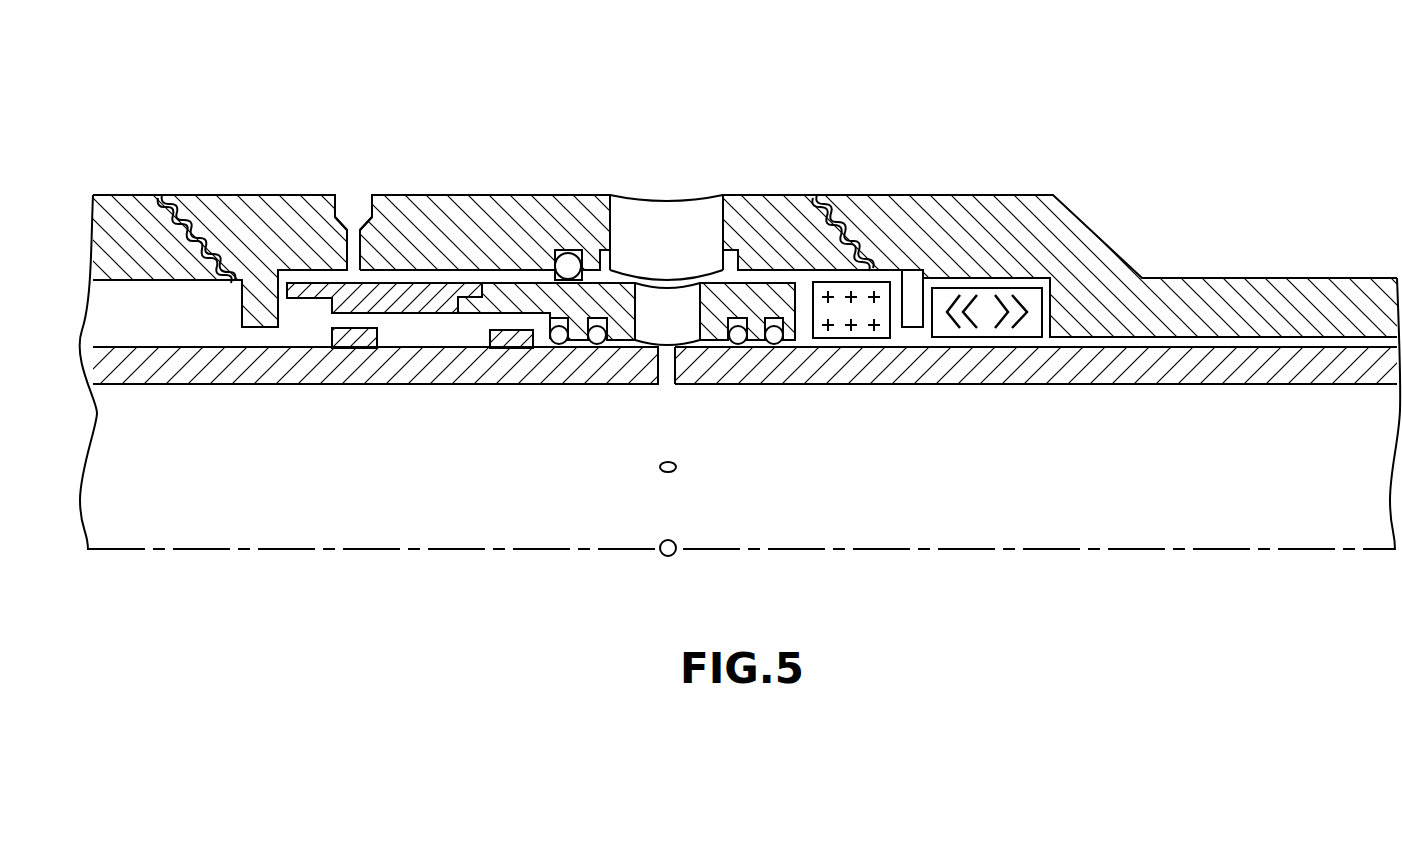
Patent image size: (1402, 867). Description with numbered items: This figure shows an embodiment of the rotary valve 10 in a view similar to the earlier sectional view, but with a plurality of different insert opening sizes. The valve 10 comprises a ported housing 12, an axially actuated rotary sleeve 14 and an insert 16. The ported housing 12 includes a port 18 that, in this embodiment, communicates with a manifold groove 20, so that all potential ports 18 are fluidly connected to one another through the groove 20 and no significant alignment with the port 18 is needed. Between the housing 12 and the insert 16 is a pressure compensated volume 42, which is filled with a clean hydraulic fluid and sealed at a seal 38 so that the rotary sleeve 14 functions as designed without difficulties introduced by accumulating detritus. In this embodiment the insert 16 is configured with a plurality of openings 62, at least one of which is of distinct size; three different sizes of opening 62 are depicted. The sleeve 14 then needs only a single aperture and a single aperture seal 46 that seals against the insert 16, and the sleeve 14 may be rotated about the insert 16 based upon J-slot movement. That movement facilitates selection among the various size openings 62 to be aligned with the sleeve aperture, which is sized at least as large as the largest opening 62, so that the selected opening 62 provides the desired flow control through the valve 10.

The rotary valve 10 is at (978, 145).
The ported housing 12 is at (807, 237).
The axially actuated rotary sleeve 14 is at (523, 292).
The insert 16 is at (770, 370).
The port 18 is at (686, 230).
The manifold groove 20 is at (733, 262).
The seal 38 is at (568, 266).
The pressure compensated volume 42 is at (470, 275).
The aperture seal 46 is at (738, 334).
The openings 62 is at (660, 467).